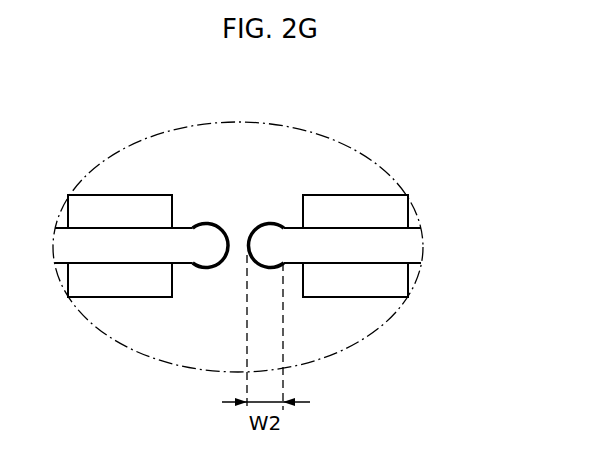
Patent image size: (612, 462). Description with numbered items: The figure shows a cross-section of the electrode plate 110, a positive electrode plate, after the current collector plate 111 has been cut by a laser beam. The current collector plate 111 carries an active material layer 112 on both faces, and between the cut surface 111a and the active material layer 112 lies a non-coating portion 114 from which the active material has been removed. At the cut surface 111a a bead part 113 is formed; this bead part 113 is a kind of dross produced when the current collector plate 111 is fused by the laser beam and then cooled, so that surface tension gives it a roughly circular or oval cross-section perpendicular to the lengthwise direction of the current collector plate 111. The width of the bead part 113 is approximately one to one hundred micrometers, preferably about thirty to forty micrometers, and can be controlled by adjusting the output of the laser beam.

The electrode plate 110 is at (355, 303).
The current collector plate 111 is at (405, 246).
The cut surface 111a is at (243, 243).
The active material layer 112 is at (377, 208).
The bead part 113 is at (265, 242).
The non-coating portion 114 is at (291, 228).